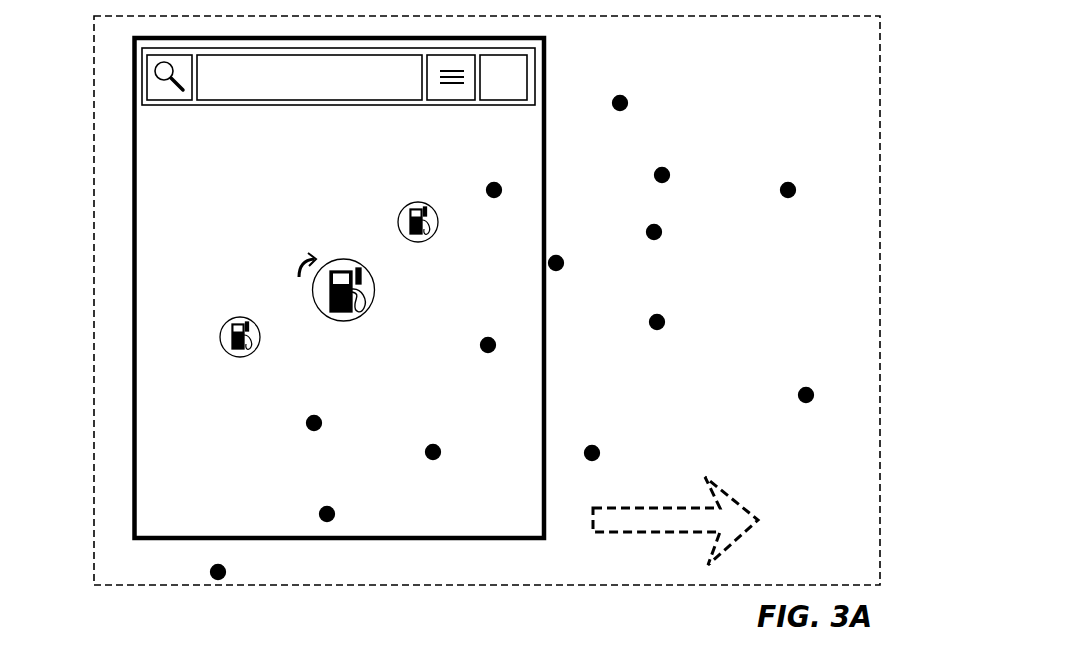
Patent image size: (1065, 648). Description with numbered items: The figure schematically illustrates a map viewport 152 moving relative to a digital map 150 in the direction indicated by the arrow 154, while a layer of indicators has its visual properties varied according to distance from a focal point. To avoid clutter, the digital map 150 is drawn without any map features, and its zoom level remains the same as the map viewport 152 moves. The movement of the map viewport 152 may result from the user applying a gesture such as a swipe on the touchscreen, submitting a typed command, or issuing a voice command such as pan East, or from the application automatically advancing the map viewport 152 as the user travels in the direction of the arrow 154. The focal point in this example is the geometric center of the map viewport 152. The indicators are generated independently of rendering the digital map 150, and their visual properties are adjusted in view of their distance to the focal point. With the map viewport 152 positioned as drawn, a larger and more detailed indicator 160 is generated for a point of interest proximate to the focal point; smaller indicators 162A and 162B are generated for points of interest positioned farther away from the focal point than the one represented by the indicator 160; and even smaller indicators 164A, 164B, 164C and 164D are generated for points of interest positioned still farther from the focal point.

The digital map 150 is at (117, 588).
The map viewport 152 is at (133, 279).
The arrow 154 is at (645, 533).
The indicator 160 is at (312, 284).
The indicator 162A is at (399, 211).
The indicator 162B is at (221, 340).
The indicator 164A is at (218, 580).
The indicator 164B is at (438, 459).
The indicator 164C is at (495, 354).
The indicator 164D is at (814, 398).